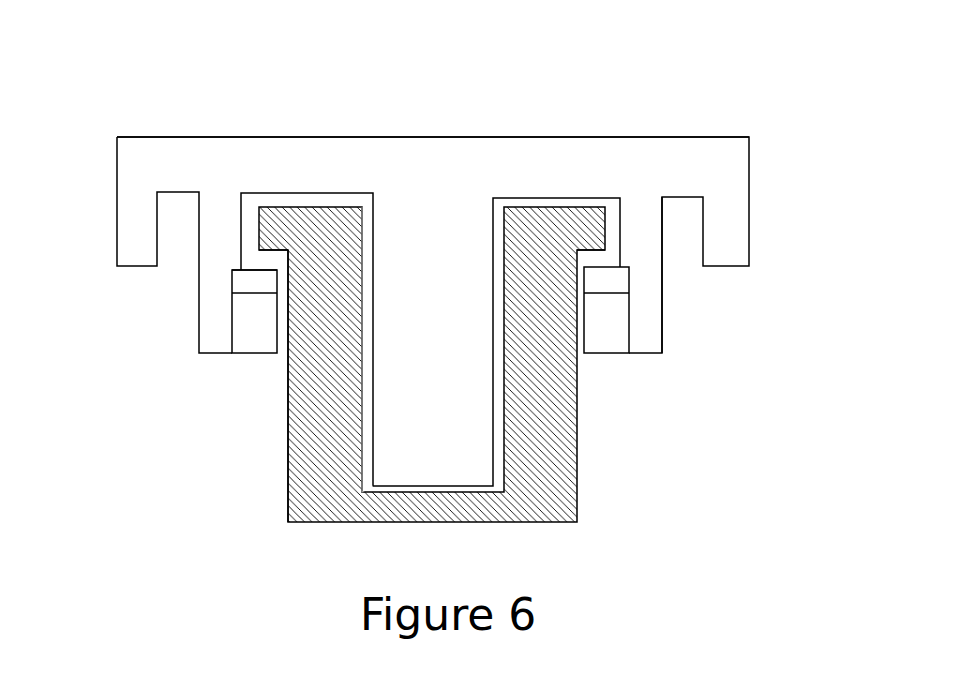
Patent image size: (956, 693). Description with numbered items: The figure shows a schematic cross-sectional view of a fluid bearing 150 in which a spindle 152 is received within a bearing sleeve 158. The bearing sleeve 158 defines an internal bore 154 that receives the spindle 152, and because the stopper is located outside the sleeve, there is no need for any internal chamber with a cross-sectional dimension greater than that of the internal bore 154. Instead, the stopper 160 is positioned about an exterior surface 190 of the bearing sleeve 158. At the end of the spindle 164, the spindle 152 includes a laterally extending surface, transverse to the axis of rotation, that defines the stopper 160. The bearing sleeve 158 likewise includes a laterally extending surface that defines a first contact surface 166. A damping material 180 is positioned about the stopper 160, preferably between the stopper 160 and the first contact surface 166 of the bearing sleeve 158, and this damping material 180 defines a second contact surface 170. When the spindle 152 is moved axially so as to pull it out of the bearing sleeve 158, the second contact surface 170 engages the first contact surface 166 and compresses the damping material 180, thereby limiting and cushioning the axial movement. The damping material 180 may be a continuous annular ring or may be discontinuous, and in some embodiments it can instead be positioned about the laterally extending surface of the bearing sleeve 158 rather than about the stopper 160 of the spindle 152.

The connector assembly 150 is at (432, 104).
The spindle 152 is at (584, 158).
The internal bore 154 is at (501, 212).
The bearing sleeve 158 is at (558, 437).
The stopper 160 is at (248, 337).
The end of the spindle 164 is at (688, 350).
The first contact surface 166 is at (279, 248).
The second contact surface 170 is at (254, 269).
The damping material 180 is at (242, 284).
The exterior surface 190 is at (288, 437).